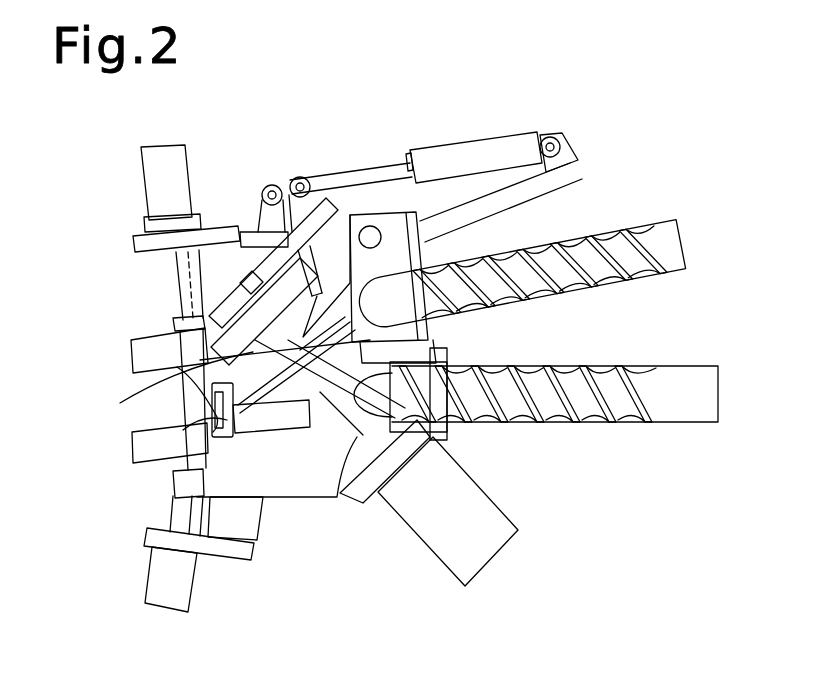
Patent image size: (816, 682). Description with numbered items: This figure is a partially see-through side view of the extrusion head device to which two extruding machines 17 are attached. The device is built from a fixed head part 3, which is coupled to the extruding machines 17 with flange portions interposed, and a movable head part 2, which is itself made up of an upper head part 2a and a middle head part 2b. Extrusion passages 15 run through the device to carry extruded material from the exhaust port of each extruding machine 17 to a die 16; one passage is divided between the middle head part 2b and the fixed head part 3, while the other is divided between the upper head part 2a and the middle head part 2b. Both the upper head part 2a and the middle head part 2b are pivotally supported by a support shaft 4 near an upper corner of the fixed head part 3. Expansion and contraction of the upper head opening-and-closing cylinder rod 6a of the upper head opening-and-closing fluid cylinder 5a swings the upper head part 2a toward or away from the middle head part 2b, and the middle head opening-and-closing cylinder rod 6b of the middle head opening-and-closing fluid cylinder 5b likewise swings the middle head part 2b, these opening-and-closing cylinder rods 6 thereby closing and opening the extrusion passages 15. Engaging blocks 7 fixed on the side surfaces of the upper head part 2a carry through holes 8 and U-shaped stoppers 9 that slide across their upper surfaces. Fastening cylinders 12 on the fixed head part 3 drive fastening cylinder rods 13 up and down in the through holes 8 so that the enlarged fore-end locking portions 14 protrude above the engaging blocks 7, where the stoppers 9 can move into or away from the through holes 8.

The movable head part 2 is at (300, 122).
The upper head part 2a is at (238, 227).
The middle head part 2b is at (332, 200).
The fixed head part 3 is at (310, 487).
The support shaft 4 is at (371, 236).
The upper head opening-and-closing fluid cylinder 5a is at (482, 140).
The middle head opening-and-closing fluid cylinder 5b is at (508, 150).
The opening-and-closing cylinder rods 6 is at (377, 83).
The upper head opening-and-closing cylinder rod 6a is at (342, 180).
The middle head opening-and-closing cylinder rod 6b is at (386, 176).
The engaging block 7 is at (215, 358).
The through hole 8 is at (212, 383).
The U-shaped stopper 9 is at (192, 330).
The fastening cylinder 12 is at (410, 517).
The fastening cylinder rod 13 is at (330, 493).
The fore-end locking portion 14 is at (240, 290).
The extrusion passage 15 is at (258, 440).
The die 16 is at (170, 430).
The extruding machine 17 is at (571, 227).